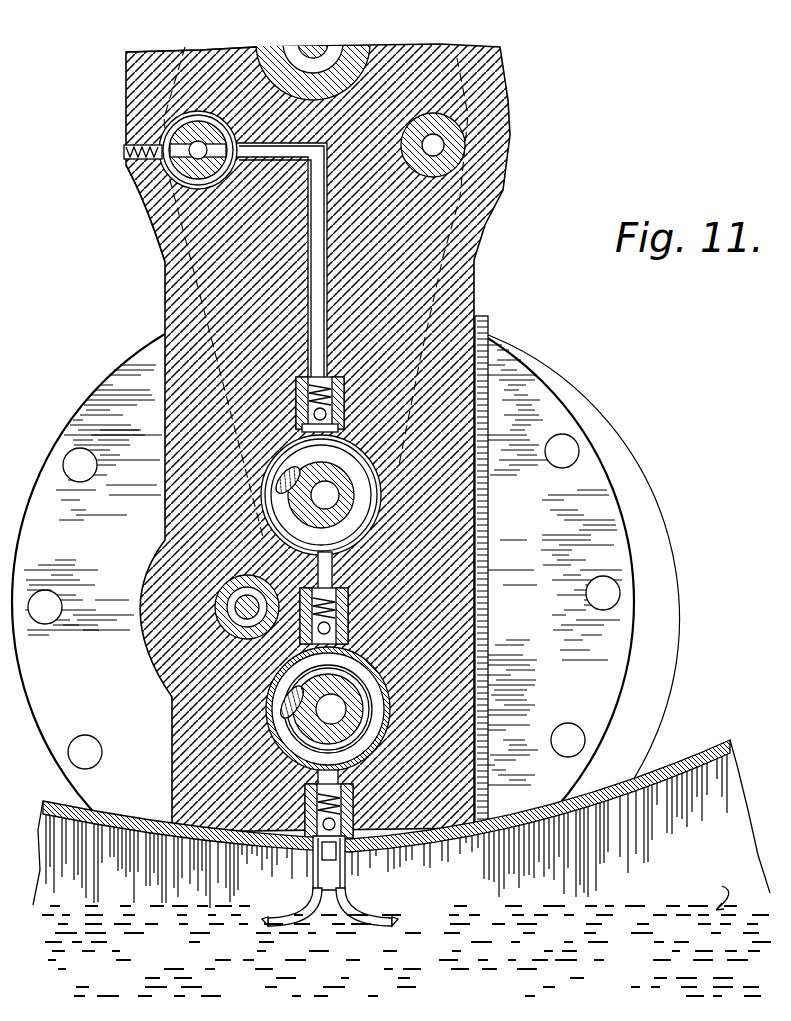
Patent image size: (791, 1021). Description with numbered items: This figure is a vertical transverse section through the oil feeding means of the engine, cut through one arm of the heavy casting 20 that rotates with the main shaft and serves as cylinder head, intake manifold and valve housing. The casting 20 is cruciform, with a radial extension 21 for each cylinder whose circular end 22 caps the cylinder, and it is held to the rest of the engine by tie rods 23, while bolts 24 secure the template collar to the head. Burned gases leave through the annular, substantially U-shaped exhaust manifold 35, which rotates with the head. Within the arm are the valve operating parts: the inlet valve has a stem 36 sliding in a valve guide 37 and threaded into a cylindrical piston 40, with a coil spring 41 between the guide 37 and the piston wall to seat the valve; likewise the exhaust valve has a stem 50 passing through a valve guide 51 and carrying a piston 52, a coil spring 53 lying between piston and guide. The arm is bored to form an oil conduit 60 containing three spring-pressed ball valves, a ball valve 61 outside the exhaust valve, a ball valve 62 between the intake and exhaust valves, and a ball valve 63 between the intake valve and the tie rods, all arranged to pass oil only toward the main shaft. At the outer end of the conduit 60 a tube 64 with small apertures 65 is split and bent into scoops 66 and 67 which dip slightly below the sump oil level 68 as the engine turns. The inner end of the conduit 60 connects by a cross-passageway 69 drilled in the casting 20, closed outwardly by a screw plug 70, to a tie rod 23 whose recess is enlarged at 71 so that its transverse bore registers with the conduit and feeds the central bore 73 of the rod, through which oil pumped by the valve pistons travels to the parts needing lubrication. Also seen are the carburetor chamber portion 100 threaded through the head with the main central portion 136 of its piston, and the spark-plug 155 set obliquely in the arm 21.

The casting 20 is at (487, 197).
The radial extension 21 is at (483, 632).
The circular end 22 is at (626, 507).
The tie rod 23 is at (462, 132).
The bolt 24 is at (579, 452).
The exhaust manifold 35 is at (47, 803).
The stem 36 is at (338, 495).
The valve guide 37 is at (350, 515).
The cylindrical piston 40 is at (368, 558).
The coil spring 41 is at (364, 533).
The stem 50 is at (332, 729).
The valve guide 51 is at (342, 747).
The piston 52 is at (300, 692).
The coil spring 53 is at (318, 708).
The oil conduit 60 is at (310, 304).
The ball valve 61 is at (252, 856).
The ball valve 62 is at (350, 626).
The ball valve 63 is at (300, 412).
The tube 64 is at (312, 855).
The apertures 65 is at (350, 860).
The scoop 66 is at (401, 906).
The scoop 67 is at (272, 915).
The sump oil level 68 is at (130, 918).
The cross-passageway 69 is at (196, 147).
The screw plug 70 is at (142, 156).
The enlarged recess 71 is at (163, 248).
The central bore 73 is at (445, 152).
The chamber portion 100 is at (266, 48).
The main central portion 136 is at (368, 34).
The spark-plug 155 is at (232, 605).